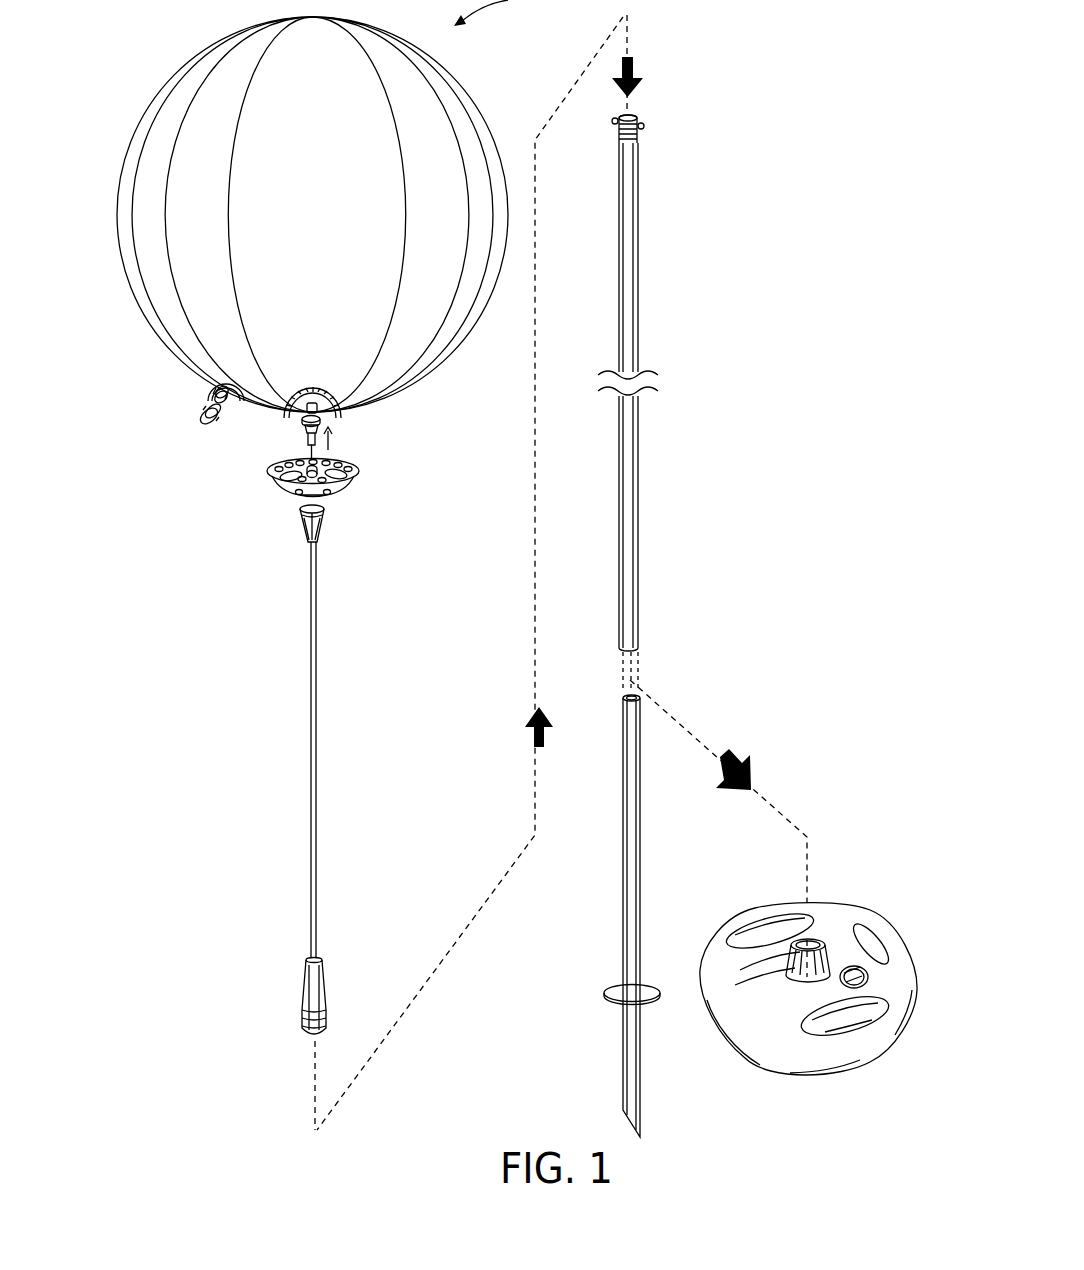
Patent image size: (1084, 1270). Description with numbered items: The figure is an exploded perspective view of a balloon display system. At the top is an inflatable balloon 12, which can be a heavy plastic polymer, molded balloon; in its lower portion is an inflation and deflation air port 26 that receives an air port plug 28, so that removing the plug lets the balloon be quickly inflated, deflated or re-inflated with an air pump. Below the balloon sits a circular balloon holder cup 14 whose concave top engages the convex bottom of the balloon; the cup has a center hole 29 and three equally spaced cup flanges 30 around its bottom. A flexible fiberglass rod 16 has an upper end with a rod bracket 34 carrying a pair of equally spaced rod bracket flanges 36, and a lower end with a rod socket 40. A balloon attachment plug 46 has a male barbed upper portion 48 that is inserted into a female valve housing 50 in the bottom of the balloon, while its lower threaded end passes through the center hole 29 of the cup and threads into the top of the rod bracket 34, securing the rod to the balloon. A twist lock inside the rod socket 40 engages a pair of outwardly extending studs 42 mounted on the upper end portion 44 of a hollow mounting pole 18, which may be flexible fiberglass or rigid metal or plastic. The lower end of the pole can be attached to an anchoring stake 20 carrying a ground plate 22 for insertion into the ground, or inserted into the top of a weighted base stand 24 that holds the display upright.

The inflatable balloon 12 is at (407, 100).
The balloon holder cup 14 is at (360, 468).
The flexible rod 16 is at (316, 662).
The hollow mounting pole 18 is at (638, 312).
The anchoring stake 20 is at (630, 862).
The ground plate 22 is at (622, 995).
The weighted base stand 24 is at (805, 920).
The inflation and deflation air port 26 is at (208, 386).
The air port plug 28 is at (200, 413).
The center hole 29 is at (285, 468).
The cup flanges 30 is at (297, 492).
The rod bracket 34 is at (310, 528).
The rod bracket flanges 36 is at (302, 518).
The rod socket 40 is at (306, 978).
The outwardly extending studs 42 is at (642, 124).
The upper end portion of the hollow mounting pole 44 is at (637, 135).
The balloon attachment plug 46 is at (300, 438).
The male barbed upper portion 48 is at (318, 412).
The female valve housing 50 is at (345, 412).